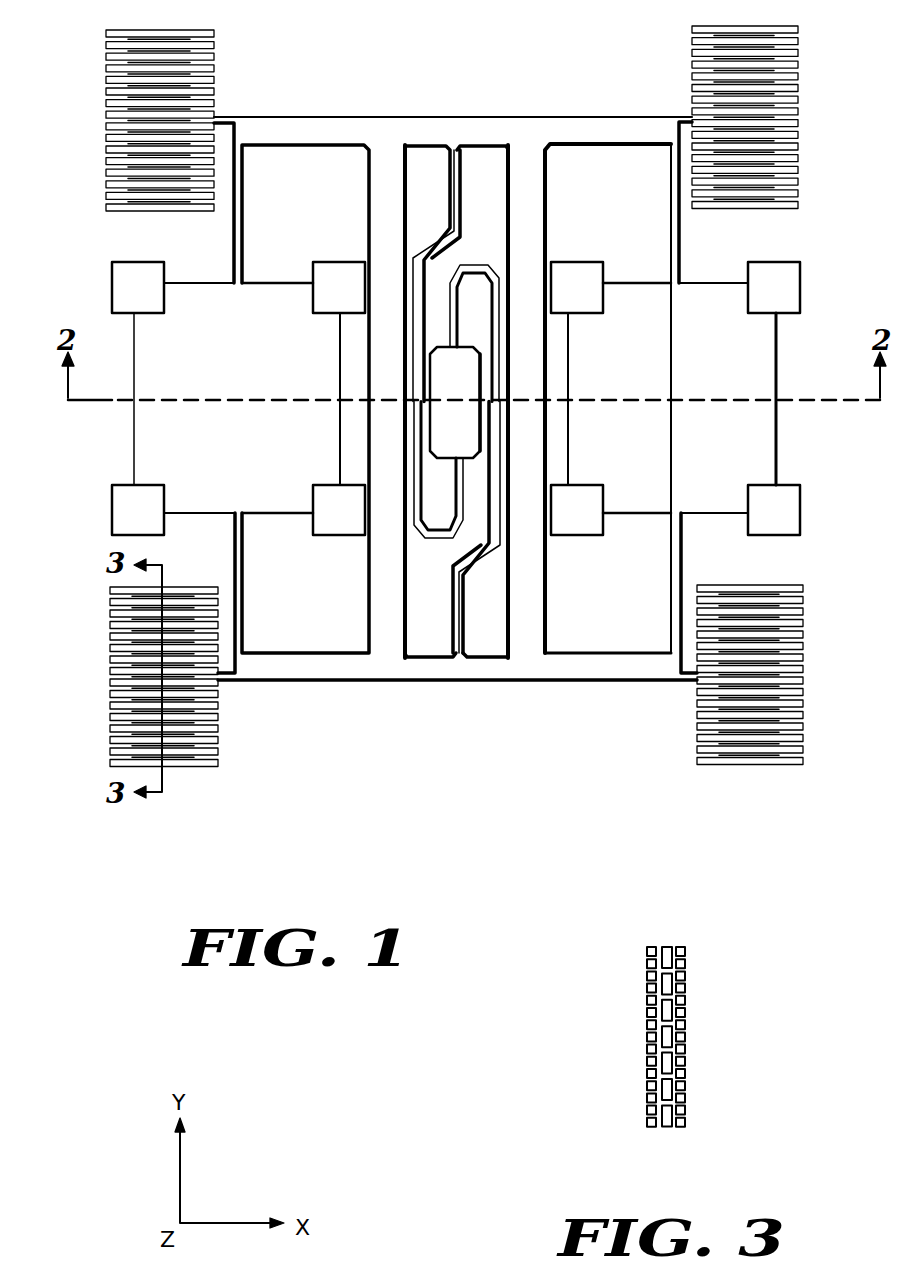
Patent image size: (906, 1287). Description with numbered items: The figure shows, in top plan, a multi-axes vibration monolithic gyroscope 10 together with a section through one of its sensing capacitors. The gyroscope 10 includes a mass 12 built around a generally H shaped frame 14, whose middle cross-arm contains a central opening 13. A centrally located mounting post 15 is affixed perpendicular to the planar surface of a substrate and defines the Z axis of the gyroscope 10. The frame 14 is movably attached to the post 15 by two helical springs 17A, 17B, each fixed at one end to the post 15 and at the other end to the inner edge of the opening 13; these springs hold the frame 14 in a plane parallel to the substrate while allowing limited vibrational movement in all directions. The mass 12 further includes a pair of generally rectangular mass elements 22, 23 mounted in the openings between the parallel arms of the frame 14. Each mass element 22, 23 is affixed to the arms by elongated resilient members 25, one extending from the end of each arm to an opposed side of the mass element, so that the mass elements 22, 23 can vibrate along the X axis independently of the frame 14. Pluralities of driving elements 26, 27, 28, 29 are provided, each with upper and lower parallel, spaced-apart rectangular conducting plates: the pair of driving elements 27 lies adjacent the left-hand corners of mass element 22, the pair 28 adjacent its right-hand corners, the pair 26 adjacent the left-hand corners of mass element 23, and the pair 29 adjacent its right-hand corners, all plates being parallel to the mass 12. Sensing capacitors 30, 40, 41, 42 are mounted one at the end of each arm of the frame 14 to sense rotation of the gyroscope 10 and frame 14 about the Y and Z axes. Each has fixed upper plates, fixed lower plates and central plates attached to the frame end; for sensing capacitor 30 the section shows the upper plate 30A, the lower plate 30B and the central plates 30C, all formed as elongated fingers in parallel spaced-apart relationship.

In FIG. 1, the multi-axes vibration monolithic gyroscope 10 is at (286, 824).
In FIG. 1, the mass 12 is at (582, 115).
In FIG. 1, the central opening 13 is at (500, 622).
In FIG. 1, the H shaped frame 14 is at (307, 115).
In FIG. 1, the mounting post 15 is at (452, 447).
In FIG. 1, the helical spring 17A is at (458, 190).
In FIG. 1, the helical spring 17B is at (458, 612).
In FIG. 1, the mass element 22 is at (298, 399).
In FIG. 1, the mass element 23 is at (620, 398).
In FIG. 1, the elongated resilient member 25 is at (232, 270).
In FIG. 1, the driving elements 26 is at (574, 262).
In FIG. 1, the driving elements 27 is at (113, 284).
In FIG. 1, the driving elements 28 is at (335, 262).
In FIG. 1, the driving elements 29 is at (801, 284).
In FIG. 1, the sensing capacitor 30 is at (108, 615).
In FIG. 1, the sensing capacitor 40 is at (105, 58).
In FIG. 1, the sensing capacitor 41 is at (798, 58).
In FIG. 1, the sensing capacitor 42 is at (800, 618).
In FIG. 3, the upper plate 30A is at (648, 1124).
In FIG. 3, the lower plate 30B is at (735, 1108).
In FIG. 3, the central plates 30C is at (668, 1131).